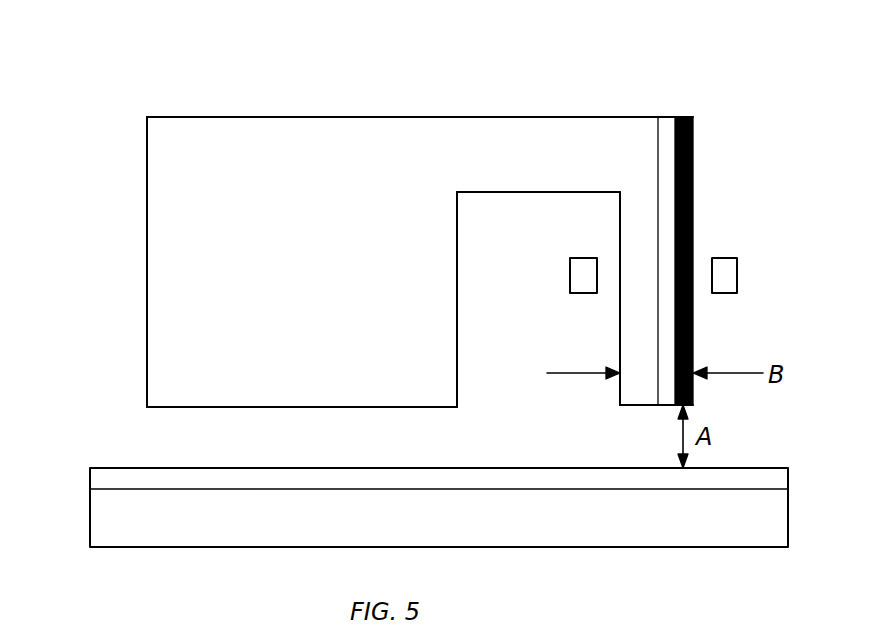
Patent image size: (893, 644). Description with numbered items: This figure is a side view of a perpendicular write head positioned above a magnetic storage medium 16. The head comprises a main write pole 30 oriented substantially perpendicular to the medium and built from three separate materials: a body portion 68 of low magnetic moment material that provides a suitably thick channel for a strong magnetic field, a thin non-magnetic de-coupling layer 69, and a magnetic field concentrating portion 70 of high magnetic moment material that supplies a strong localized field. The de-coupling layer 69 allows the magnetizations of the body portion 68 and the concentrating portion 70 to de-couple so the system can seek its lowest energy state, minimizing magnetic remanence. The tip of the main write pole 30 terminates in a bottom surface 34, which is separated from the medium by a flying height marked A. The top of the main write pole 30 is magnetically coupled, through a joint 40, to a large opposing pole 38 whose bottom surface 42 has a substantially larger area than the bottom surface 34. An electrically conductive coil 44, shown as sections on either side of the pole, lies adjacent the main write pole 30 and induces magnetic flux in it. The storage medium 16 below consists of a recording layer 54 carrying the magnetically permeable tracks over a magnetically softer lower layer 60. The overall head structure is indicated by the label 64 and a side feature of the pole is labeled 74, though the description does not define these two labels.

The magnetic storage medium 16 is at (86, 444).
The main write pole 30 is at (693, 106).
The bottom surface 34 is at (636, 405).
The opposing pole 38 is at (300, 301).
The joint 40 is at (552, 169).
The bottom surface 42 is at (248, 407).
The electrically conductive coil 44 is at (573, 277).
The recording layer 54 is at (416, 478).
The lower layer 60 is at (210, 536).
The slider 64 is at (392, 94).
The body portion 68 is at (652, 300).
The de-coupling layer 69 is at (665, 322).
The magnetic field concentrating portion 70 is at (694, 141).
The side surface of head layer 74 is at (620, 318).